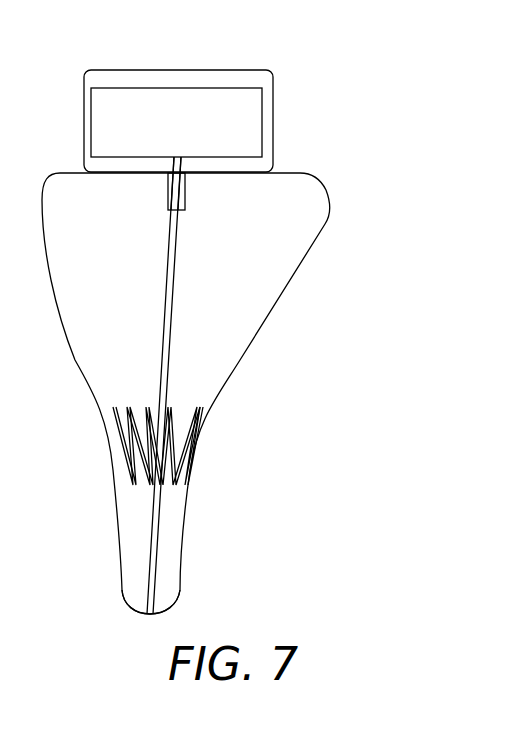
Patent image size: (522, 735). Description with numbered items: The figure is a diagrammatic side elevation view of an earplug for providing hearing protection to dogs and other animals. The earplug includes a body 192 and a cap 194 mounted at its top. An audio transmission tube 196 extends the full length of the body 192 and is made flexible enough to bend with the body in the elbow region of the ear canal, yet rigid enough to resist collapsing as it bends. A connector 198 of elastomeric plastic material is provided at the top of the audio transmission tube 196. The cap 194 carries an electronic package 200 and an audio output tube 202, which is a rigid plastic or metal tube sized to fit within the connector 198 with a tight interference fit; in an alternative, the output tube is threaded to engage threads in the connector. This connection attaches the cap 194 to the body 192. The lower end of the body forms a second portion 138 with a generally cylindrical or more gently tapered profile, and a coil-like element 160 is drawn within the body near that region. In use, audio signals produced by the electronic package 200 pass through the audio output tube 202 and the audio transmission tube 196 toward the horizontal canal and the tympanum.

The second portion 138 is at (180, 572).
The spring / coil 160 is at (197, 453).
The body 192 is at (315, 246).
The cap 194 is at (125, 69).
The audio transmission tube 196 is at (166, 290).
The connector 198 is at (168, 193).
The electronic package 200 is at (84, 116).
The audio output tube 202 is at (185, 184).